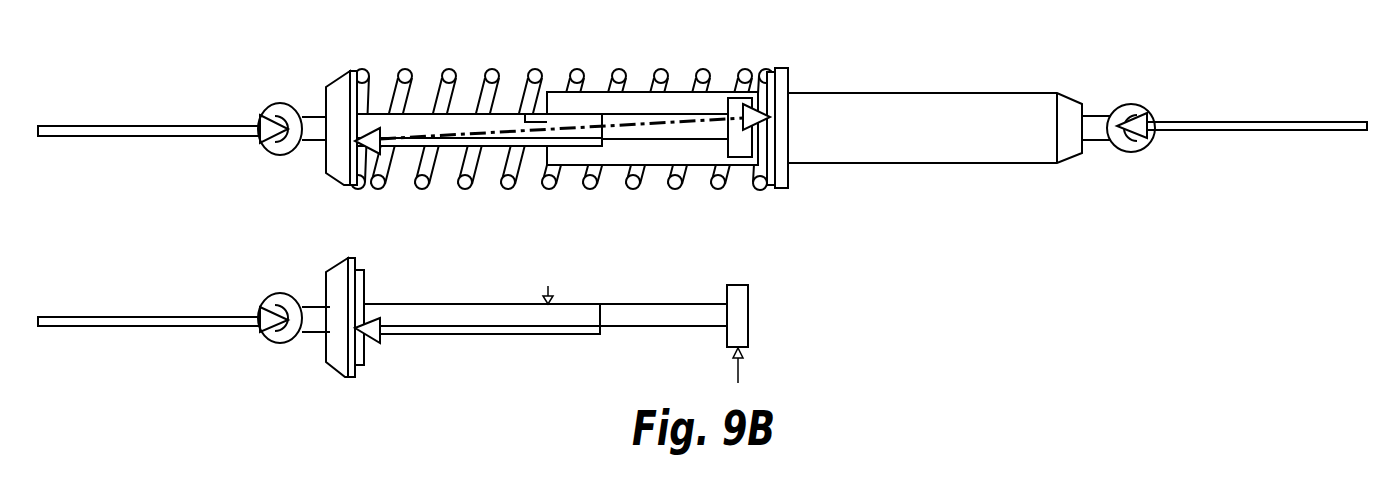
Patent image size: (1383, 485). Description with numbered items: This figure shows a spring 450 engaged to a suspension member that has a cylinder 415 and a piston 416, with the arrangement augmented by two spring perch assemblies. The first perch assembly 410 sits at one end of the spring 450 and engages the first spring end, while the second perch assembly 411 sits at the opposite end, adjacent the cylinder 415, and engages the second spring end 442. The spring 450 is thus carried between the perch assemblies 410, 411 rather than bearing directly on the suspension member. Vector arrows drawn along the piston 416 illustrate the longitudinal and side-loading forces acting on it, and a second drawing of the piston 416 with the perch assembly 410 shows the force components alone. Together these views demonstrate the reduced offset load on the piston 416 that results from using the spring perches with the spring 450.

The perch assembly 410 is at (360, 86).
The perch assembly 411 is at (777, 68).
The cylinder 415 is at (900, 113).
The piston 416 is at (413, 122).
The second spring end 442 is at (763, 191).
The spring 450 is at (535, 68).